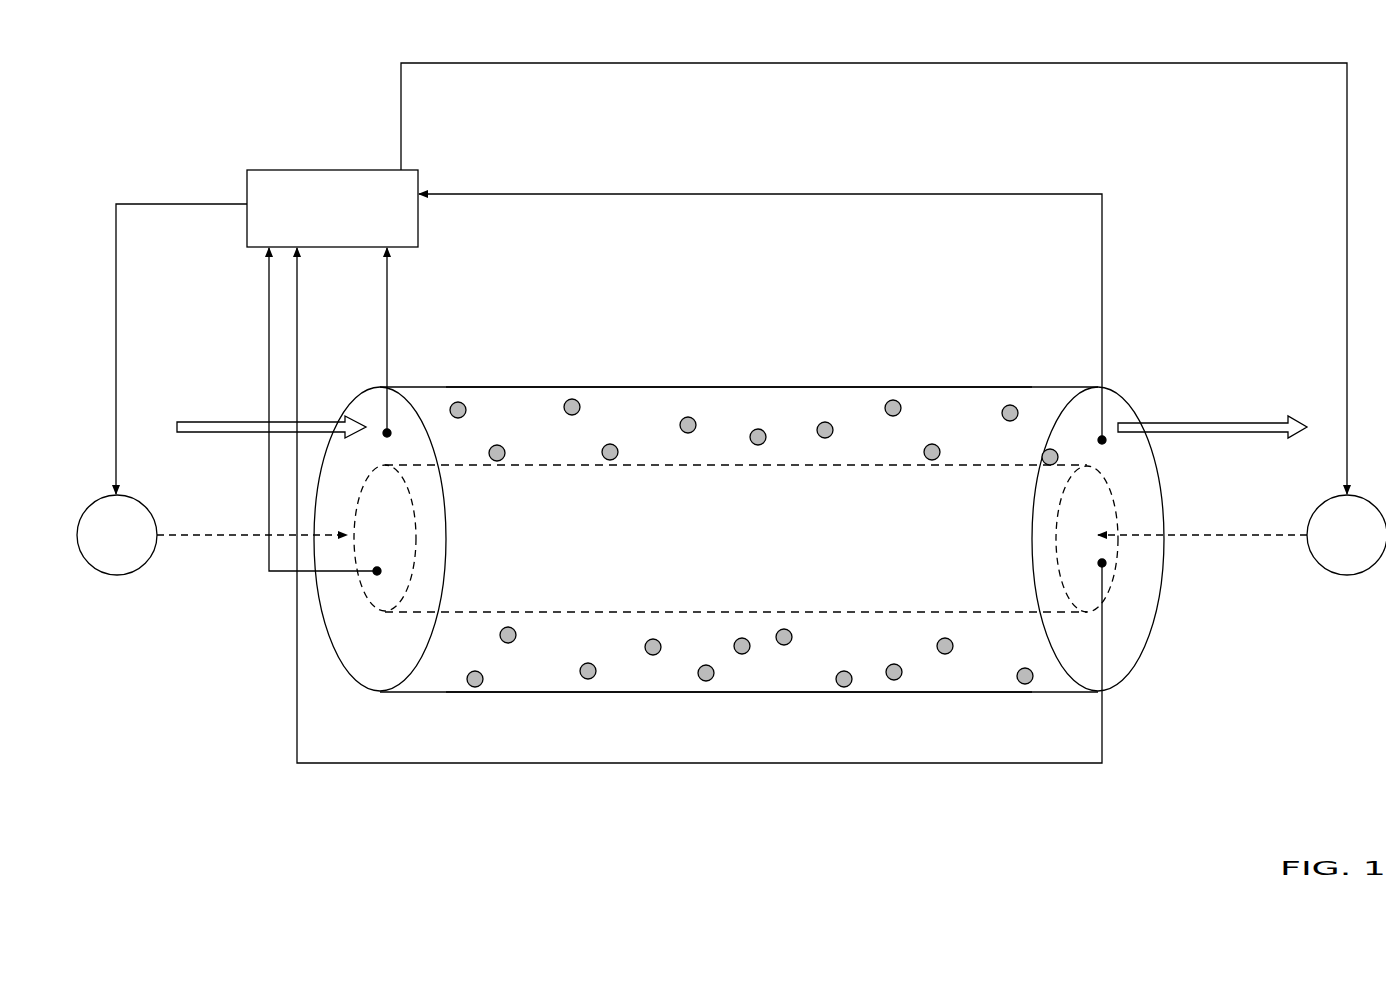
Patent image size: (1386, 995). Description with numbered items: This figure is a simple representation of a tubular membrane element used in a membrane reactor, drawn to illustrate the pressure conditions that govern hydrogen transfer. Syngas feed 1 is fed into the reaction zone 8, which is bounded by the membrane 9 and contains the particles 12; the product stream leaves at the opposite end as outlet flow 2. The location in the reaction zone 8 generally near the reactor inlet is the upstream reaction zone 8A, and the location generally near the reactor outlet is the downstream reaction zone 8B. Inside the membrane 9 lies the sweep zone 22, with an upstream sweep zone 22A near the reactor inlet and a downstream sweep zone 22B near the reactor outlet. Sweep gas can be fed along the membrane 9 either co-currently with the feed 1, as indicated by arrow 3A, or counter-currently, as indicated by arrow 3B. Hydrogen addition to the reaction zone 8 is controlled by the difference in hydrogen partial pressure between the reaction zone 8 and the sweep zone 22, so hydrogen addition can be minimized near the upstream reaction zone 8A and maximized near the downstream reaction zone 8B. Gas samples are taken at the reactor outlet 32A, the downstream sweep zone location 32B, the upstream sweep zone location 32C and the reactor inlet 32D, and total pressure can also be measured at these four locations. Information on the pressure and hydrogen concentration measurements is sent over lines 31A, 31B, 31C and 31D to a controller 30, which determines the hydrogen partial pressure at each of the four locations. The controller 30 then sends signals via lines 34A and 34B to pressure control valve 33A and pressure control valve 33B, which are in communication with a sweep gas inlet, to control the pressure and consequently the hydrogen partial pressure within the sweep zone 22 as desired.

The syngas feed 1 is at (217, 422).
The outlet flow 2 is at (1255, 423).
The co-current sweep gas flow 3A is at (190, 533).
The counter-current sweep gas flow 3B is at (1273, 533).
The reaction zone 8 is at (792, 428).
The upstream reaction zone 8A is at (476, 454).
The downstream reaction zone 8B is at (1007, 454).
The membrane 9 is at (582, 462).
The particles 12 is at (1001, 413).
The sweep zone 22 is at (739, 539).
The upstream sweep zone 22A is at (500, 558).
The downstream sweep zone 22B is at (991, 558).
The controller 30 is at (346, 222).
The line 31A is at (650, 193).
The line 31B is at (298, 330).
The line 31C is at (268, 347).
The line 31D is at (388, 325).
The reactor outlet 32A is at (1102, 440).
The downstream sweep zone location 32B is at (1102, 563).
The upstream sweep zone location 32C is at (377, 571).
The reactor inlet 32D is at (387, 433).
The pressure control valve 33A is at (137, 546).
The pressure control valve 33B is at (1367, 546).
The line 34A is at (168, 204).
The line 34B is at (457, 63).